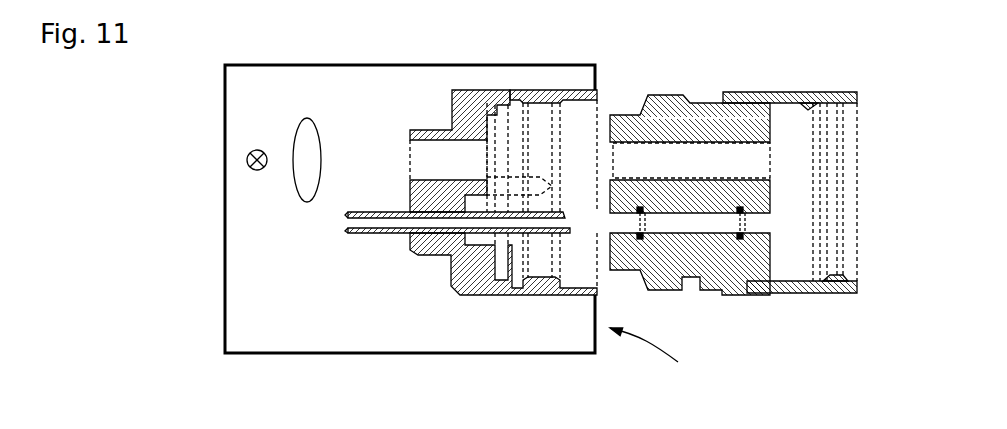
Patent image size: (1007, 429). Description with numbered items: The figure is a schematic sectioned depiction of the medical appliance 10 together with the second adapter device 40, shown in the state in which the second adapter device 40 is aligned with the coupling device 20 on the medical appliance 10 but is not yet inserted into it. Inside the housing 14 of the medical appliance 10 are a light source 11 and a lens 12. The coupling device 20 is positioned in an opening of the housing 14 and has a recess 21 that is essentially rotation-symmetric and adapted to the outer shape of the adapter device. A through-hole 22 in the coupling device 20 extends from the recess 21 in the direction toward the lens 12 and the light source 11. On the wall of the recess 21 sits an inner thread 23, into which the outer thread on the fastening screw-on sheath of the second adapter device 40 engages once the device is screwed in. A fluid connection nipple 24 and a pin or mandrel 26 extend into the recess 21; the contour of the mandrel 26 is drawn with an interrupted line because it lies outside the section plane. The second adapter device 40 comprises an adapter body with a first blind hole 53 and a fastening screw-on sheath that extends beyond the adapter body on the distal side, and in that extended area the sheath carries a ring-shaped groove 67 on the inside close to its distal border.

The medical appliance 10 is at (656, 357).
The light source 11 is at (247, 160).
The lens 12 is at (297, 190).
The housing 14 is at (223, 303).
The coupling device 20 is at (597, 90).
The recess 21 is at (573, 117).
The through-hole 22 is at (435, 143).
The inner thread 23 is at (532, 265).
The fluid connection nipple 24 is at (572, 232).
The mandrel 26 is at (527, 168).
The second adapter device 40 is at (753, 300).
The first blind hole 53 is at (660, 177).
The ring-shaped groove 67 is at (803, 111).